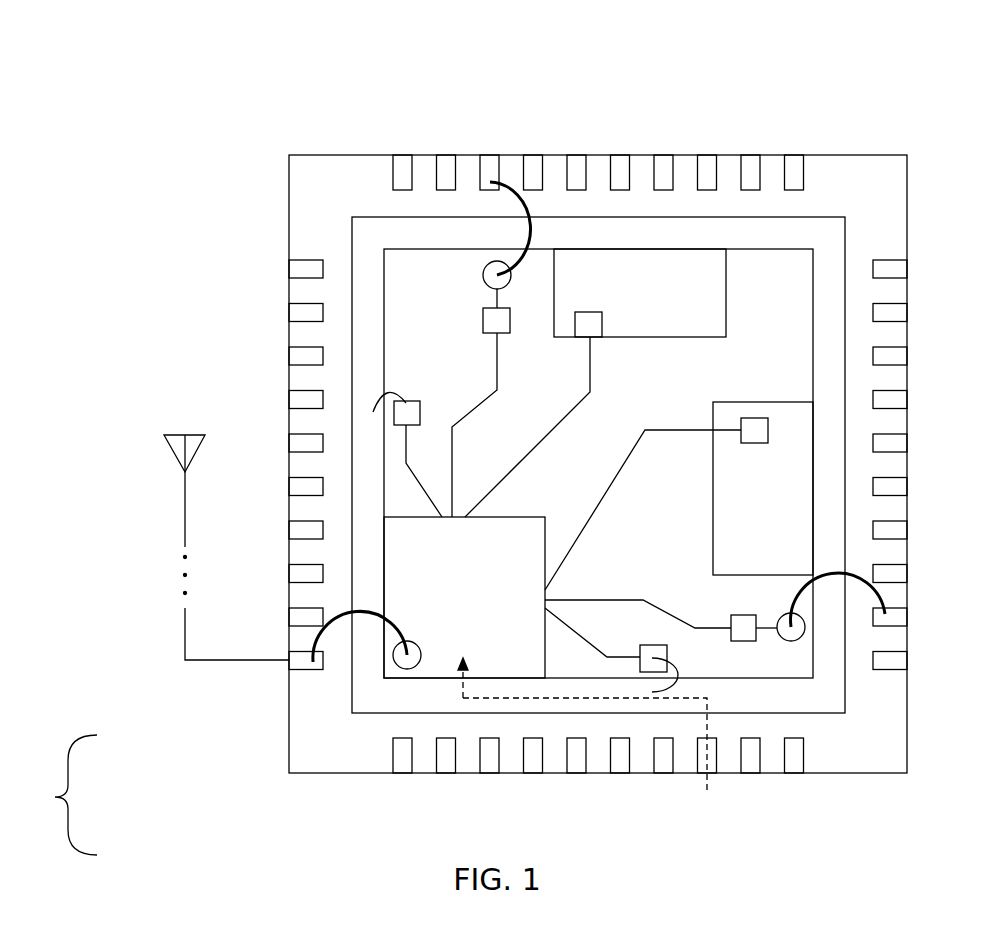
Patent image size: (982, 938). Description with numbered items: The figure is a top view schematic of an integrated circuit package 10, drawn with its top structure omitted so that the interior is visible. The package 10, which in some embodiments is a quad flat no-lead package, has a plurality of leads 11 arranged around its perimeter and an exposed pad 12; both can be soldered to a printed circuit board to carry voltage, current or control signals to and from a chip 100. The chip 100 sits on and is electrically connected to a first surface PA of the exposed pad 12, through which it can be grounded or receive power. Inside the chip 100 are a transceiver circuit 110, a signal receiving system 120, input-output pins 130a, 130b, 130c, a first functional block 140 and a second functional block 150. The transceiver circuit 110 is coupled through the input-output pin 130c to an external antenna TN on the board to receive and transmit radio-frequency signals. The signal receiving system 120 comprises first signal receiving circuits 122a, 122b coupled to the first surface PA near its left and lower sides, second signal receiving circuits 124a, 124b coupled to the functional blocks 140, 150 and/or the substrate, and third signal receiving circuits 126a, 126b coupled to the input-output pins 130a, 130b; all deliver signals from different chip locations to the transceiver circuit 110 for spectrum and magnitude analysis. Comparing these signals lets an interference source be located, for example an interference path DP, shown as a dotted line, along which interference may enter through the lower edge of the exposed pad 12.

The integrated circuit package 10 is at (579, 393).
The leads 11 is at (488, 170).
The exposed pad 12 is at (732, 227).
The chip 100 is at (790, 300).
The first surface PA is at (606, 389).
The transceiver circuit 110 is at (507, 517).
The signal receiving system 120 is at (106, 795).
The first signal receiving circuit 122a is at (407, 410).
The first signal receiving circuit 122b is at (650, 645).
The second signal receiving circuit 124a is at (597, 337).
The second signal receiving circuit 124b is at (755, 418).
The third signal receiving circuit 126a is at (505, 333).
The third signal receiving circuit 126b is at (731, 618).
The input-output pin 130a is at (483, 275).
The input-output pin 130b is at (795, 641).
The input-output pin 130c is at (421, 652).
The first functional block 140 is at (598, 250).
The second functional block 150 is at (713, 517).
The interference path DP is at (707, 700).
The external antenna TN is at (177, 435).